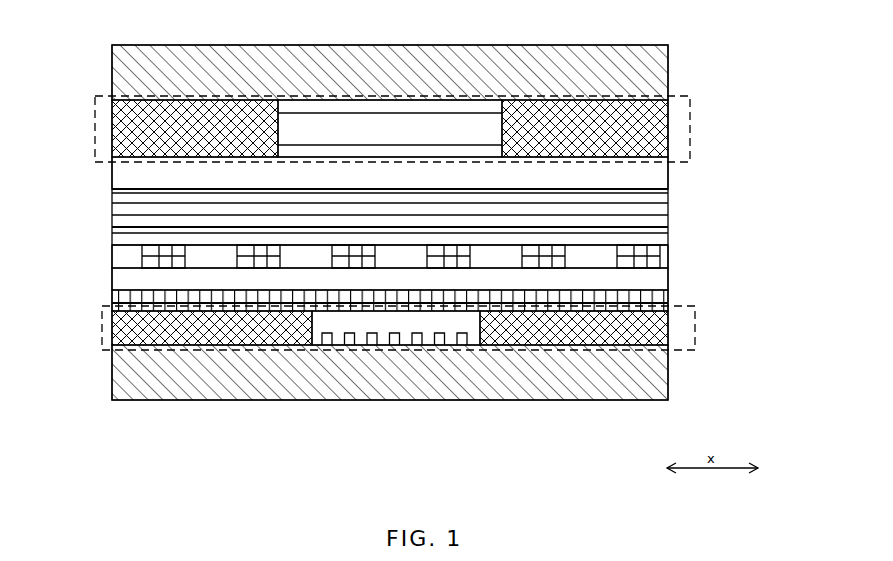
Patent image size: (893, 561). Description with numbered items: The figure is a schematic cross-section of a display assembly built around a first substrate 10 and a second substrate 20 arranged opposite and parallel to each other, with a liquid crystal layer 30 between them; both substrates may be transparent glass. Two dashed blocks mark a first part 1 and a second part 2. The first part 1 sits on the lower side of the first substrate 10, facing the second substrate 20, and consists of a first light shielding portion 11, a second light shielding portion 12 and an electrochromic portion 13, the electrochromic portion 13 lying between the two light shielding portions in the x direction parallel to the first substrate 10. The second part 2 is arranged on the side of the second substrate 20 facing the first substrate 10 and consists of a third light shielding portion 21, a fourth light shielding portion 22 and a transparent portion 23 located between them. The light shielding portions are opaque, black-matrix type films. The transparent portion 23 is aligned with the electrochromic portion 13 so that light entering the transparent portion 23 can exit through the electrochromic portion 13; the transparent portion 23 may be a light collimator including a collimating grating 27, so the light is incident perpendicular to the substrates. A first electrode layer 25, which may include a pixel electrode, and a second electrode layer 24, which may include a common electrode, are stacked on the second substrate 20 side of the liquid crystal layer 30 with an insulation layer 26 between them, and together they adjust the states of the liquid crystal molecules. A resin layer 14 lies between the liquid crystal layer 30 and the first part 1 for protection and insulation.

The first part 1 is at (168, 97).
The second part 2 is at (202, 352).
The first substrate 10 is at (647, 62).
The first light shielding portion 11 is at (135, 123).
The second light shielding portion 12 is at (645, 137).
The electrochromic portion 13 is at (407, 125).
The resin layer 14 is at (645, 180).
The second substrate 20 is at (635, 388).
The third light shielding portion 21 is at (148, 328).
The fourth light shielding portion 22 is at (643, 333).
The transparent portion 23 is at (468, 322).
The second electrode layer 24 is at (148, 306).
The first electrode layer 25 is at (163, 257).
The insulation layer 26 is at (645, 283).
The collimating grating 27 is at (352, 340).
The liquid crystal layer 30 is at (645, 235).